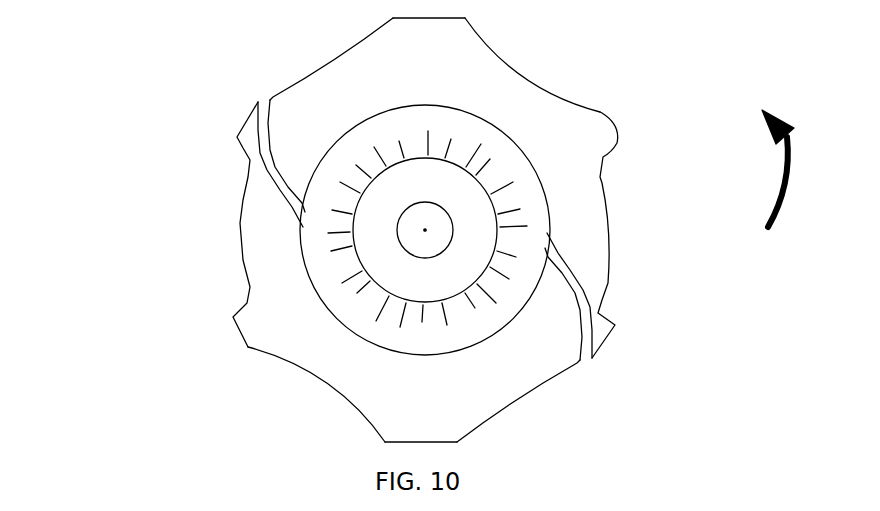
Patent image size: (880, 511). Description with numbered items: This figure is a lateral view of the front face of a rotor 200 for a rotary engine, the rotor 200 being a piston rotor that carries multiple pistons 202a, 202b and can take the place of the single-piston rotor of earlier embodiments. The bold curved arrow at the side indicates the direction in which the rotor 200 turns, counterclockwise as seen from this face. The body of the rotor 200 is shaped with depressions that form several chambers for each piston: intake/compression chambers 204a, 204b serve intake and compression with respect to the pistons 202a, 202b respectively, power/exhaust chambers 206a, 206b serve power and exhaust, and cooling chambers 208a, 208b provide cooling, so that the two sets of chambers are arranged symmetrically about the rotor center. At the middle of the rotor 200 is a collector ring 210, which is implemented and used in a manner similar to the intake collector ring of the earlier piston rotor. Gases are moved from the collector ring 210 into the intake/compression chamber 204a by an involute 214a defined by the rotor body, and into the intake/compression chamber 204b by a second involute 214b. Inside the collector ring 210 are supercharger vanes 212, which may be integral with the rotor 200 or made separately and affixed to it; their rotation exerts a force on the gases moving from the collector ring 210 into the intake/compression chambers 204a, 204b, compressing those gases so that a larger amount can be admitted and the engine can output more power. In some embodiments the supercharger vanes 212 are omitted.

The rotor 200 is at (124, 19).
The piston 202a is at (372, 19).
The piston 202b is at (369, 448).
The intake/compression chamber 204a is at (324, 54).
The intake/compression chamber 204b is at (520, 405).
The power/exhaust chamber 206a is at (568, 61).
The power/exhaust chamber 206b is at (293, 411).
The cooling chamber 208a is at (629, 198).
The cooling chamber 208b is at (219, 197).
The collector ring 210 is at (472, 101).
The supercharger vanes 212 is at (491, 150).
The involute 214a is at (260, 92).
The involute 214b is at (589, 373).